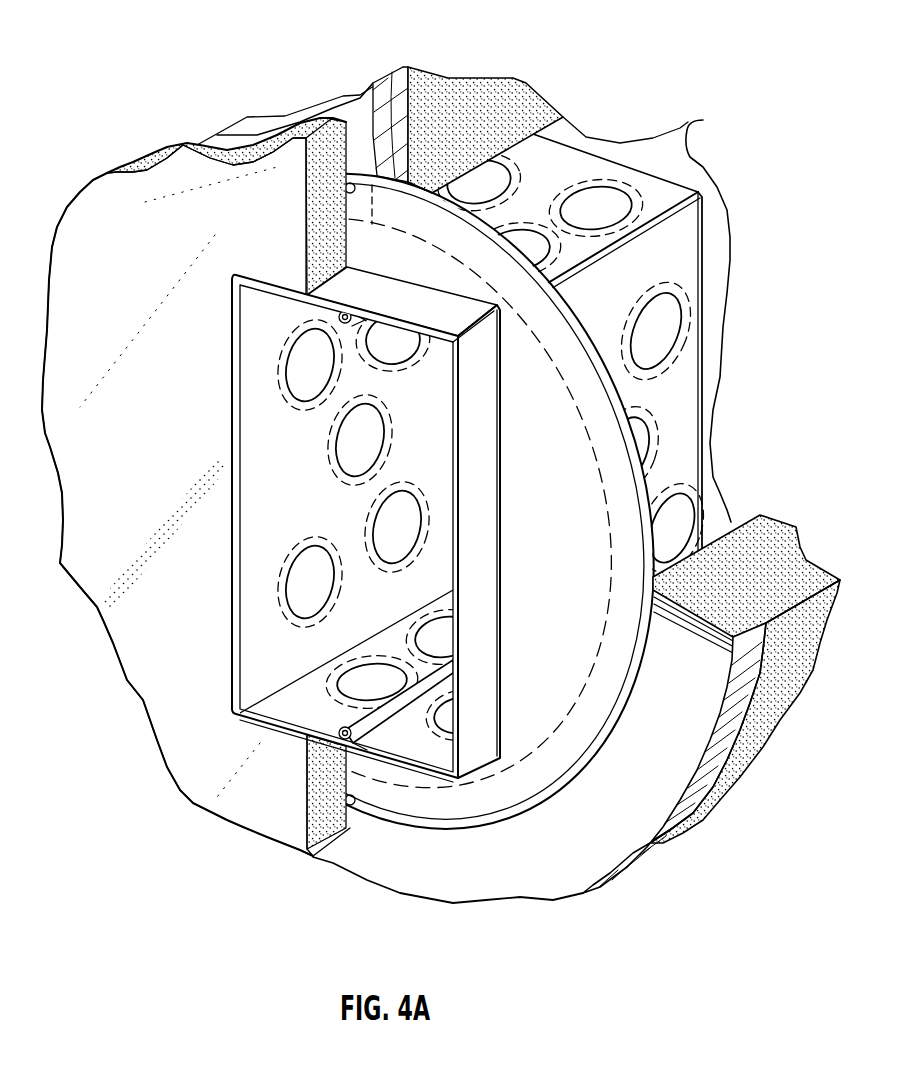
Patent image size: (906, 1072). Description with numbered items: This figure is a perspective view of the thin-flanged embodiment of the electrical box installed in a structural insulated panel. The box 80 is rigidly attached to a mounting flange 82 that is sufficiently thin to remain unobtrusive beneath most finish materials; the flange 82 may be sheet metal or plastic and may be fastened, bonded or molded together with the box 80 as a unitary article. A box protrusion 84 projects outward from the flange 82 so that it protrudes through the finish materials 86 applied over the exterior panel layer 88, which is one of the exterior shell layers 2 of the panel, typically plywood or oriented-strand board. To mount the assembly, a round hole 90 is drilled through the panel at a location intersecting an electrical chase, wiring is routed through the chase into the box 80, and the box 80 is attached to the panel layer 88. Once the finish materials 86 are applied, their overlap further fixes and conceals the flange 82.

The exterior shell layer 2 is at (397, 60).
The box 80 is at (379, 458).
The mounting flange 82 is at (543, 767).
The box protrusion 84 is at (484, 443).
The finish materials 86 is at (258, 198).
The exterior panel layer 88 is at (452, 80).
The round hole 90 is at (576, 505).